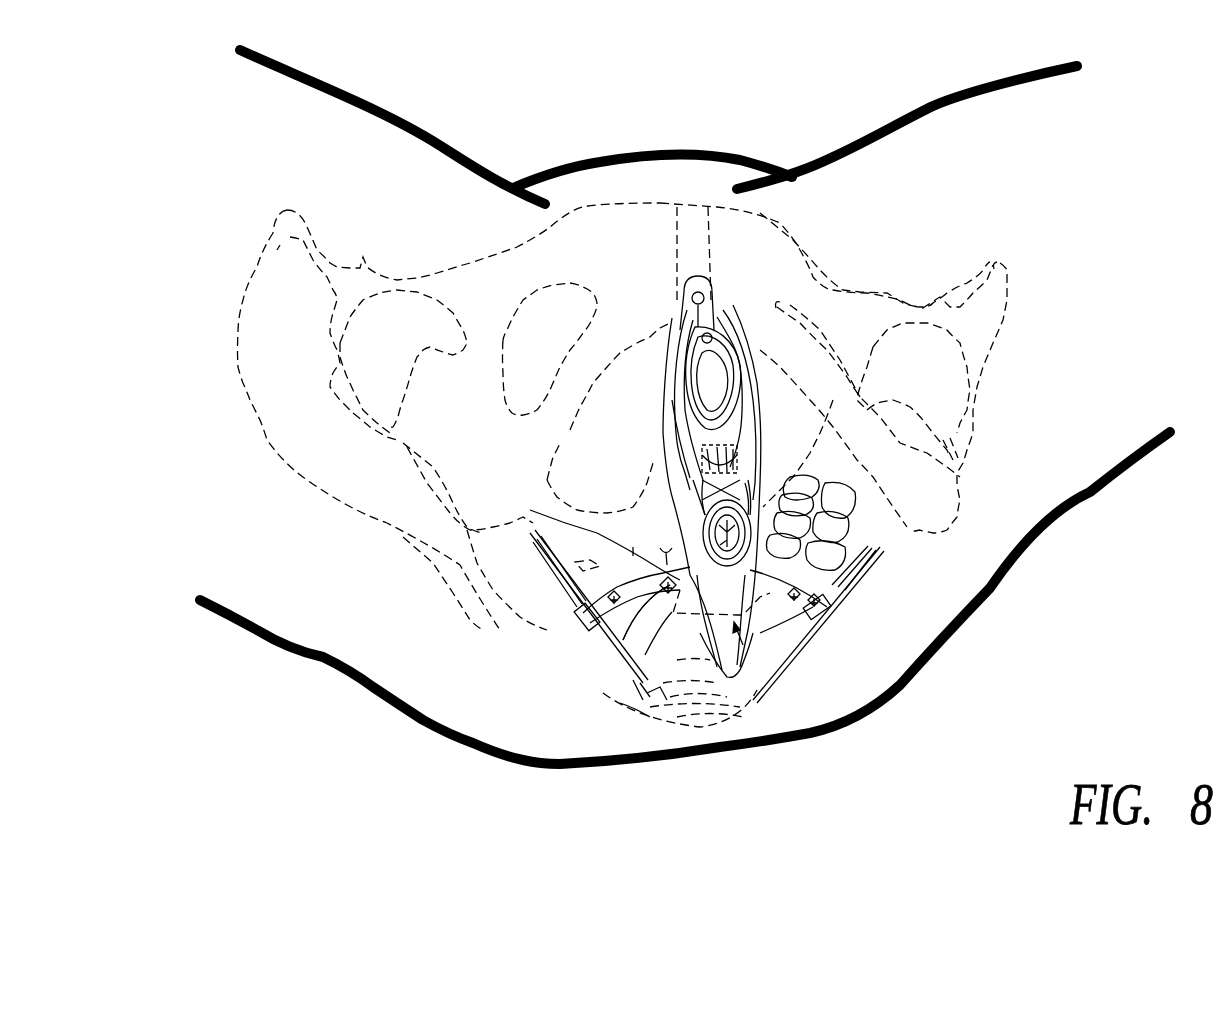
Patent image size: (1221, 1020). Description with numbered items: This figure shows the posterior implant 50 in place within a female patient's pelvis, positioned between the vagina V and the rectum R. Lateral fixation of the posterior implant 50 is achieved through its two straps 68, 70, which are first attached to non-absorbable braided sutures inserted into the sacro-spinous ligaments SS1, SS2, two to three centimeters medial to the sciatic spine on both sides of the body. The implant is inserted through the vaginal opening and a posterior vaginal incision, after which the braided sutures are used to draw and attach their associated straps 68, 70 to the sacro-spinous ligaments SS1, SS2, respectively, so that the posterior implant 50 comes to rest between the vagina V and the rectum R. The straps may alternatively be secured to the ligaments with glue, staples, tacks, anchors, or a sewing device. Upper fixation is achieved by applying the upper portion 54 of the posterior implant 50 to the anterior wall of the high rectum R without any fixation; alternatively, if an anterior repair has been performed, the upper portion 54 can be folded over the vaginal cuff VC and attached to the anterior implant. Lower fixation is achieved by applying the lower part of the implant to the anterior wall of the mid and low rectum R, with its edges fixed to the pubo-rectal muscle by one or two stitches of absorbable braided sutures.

The posterior implant 50 is at (680, 518).
The strap 70 is at (612, 582).
The strap 68 is at (807, 627).
The upper portion 54 is at (758, 684).
The sacro-spinous ligament SS1 is at (537, 562).
The sacro-spinous ligament SS2 is at (883, 565).
The vagina V is at (687, 478).
The vaginal cuff VC is at (660, 553).
The rectum R is at (668, 645).